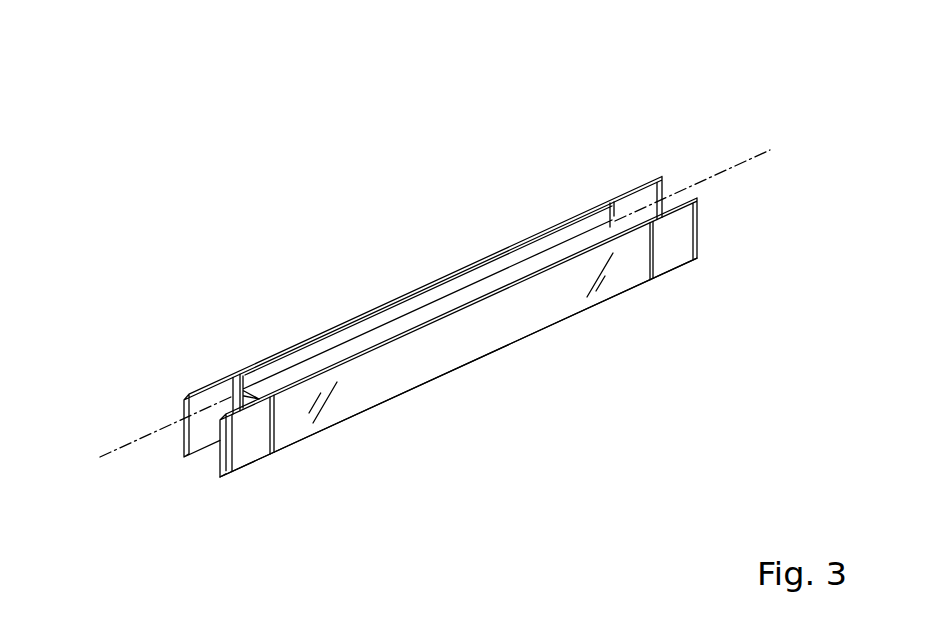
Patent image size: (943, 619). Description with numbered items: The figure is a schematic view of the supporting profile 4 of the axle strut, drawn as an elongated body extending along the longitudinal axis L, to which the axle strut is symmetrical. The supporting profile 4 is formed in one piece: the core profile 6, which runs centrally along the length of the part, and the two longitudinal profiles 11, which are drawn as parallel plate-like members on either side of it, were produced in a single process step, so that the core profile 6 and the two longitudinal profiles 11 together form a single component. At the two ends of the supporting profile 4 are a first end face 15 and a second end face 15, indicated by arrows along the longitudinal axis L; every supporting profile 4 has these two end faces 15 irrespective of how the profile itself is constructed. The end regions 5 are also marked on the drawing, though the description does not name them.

The supporting profile 4 is at (383, 425).
The end holding element 5 is at (205, 378).
The core profile 6 is at (515, 273).
The longitudinal profile 11 is at (405, 292).
The end face 15 is at (197, 471).
The longitudinal axis L is at (743, 153).